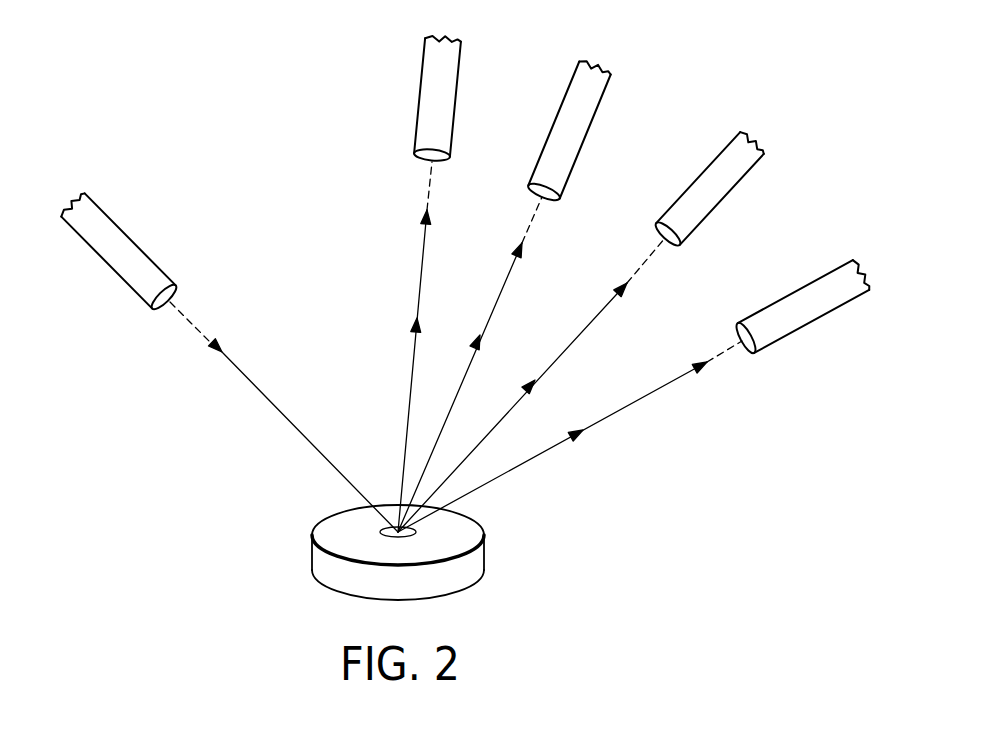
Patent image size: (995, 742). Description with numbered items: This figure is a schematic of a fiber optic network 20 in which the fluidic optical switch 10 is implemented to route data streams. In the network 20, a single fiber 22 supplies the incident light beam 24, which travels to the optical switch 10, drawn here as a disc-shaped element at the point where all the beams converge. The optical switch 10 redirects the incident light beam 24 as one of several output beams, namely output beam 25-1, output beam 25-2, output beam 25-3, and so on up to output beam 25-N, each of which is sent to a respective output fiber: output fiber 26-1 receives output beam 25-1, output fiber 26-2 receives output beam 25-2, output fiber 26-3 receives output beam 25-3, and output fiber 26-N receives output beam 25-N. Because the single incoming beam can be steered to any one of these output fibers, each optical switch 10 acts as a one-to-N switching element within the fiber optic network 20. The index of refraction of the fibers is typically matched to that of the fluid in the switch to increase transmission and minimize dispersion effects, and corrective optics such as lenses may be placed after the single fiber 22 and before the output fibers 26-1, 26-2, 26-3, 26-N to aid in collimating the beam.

The optical switch 10 is at (482, 557).
The fiber optic network 20 is at (177, 485).
The single fiber 22 is at (122, 225).
The incident light beam 24 is at (300, 432).
The output beam 25-1 is at (421, 273).
The output beam 25-2 is at (500, 295).
The output beam 25-3 is at (577, 335).
The output beam 25-N is at (638, 398).
The output fiber 26-1 is at (462, 82).
The output fiber 26-2 is at (598, 113).
The output fiber 26-3 is at (748, 180).
The output fiber 26-N is at (835, 313).